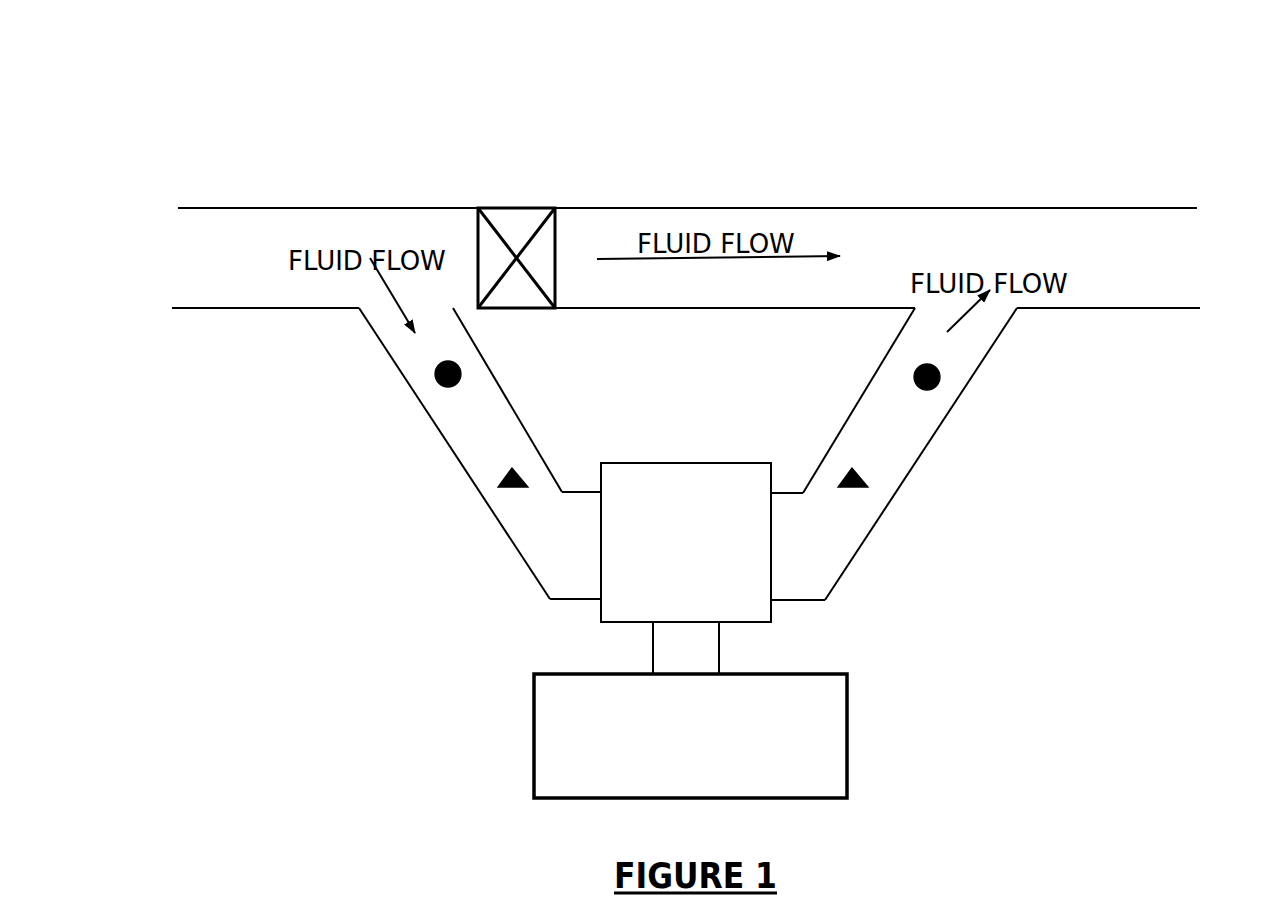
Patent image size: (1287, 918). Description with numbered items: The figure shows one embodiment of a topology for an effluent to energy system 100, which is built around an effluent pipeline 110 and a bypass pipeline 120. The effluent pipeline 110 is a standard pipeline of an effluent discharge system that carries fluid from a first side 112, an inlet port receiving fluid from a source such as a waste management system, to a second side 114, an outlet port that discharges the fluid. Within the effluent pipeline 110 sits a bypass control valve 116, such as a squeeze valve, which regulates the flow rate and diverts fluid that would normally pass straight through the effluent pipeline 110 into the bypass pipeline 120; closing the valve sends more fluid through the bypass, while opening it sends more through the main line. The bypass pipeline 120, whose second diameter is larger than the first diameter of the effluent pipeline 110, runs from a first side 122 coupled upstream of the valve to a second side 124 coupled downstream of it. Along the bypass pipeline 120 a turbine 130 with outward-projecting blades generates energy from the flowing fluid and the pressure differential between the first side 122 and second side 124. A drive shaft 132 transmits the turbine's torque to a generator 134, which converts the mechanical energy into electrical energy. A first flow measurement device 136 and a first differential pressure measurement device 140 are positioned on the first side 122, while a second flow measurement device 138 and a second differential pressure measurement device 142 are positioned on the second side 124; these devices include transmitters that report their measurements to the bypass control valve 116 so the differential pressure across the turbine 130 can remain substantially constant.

The effluent to energy system 100 is at (240, 123).
The effluent pipeline 110 is at (597, 208).
The first side 112 is at (265, 277).
The second side 114 is at (985, 422).
The bypass control valve 116 is at (517, 206).
The bypass pipeline 120 is at (432, 428).
The first side of bypass pipeline 122 is at (478, 340).
The second side of bypass pipeline 124 is at (887, 333).
The turbine 130 is at (686, 542).
The drive shaft 132 is at (727, 646).
The generator 134 is at (690, 736).
The first flow measurement device 136 is at (418, 374).
The second flow measurement device 138 is at (948, 374).
The first differential pressure measurement device 140 is at (490, 480).
The second differential pressure measurement device 142 is at (878, 482).